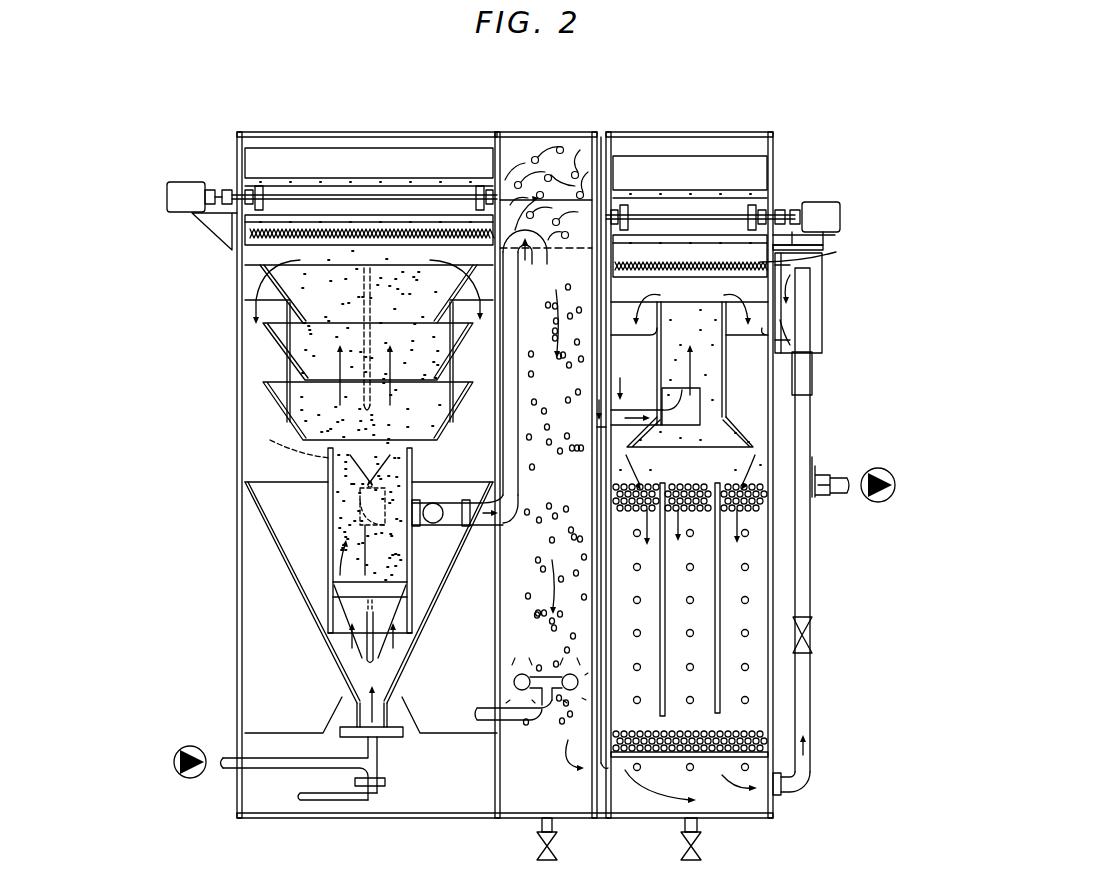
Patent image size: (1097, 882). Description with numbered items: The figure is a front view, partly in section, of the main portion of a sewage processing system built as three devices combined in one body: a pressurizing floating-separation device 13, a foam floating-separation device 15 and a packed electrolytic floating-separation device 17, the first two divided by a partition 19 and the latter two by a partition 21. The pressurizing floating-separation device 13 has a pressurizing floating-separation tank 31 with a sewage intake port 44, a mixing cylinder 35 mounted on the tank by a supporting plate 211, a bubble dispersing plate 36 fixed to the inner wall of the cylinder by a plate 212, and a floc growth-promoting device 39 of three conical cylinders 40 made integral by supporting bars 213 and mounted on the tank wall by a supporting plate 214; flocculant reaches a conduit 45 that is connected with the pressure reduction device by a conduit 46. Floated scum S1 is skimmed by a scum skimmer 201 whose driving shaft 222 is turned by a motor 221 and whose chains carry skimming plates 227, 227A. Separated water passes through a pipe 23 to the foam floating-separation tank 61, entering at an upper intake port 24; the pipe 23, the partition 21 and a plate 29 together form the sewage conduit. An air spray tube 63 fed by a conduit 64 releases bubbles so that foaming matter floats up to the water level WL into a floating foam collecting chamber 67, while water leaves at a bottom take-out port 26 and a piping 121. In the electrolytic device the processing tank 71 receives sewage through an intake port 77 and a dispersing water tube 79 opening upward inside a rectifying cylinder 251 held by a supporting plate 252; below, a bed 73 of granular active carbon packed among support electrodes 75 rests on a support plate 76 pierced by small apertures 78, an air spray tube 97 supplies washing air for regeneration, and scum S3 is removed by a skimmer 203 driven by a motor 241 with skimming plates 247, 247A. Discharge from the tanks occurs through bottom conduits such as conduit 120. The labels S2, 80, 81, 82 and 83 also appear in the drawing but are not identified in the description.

The pressurizing floating-separation device 13 is at (404, 140).
The foam floating-separation device 15 is at (587, 123).
The packed electrolytic floating-separation device 17 is at (706, 123).
The partition 19 is at (460, 340).
The partition 21 is at (606, 520).
The pipe 23 is at (503, 421).
The intake port 24 is at (541, 262).
The take-out port 26 is at (598, 762).
The plate 29 is at (591, 386).
The pressurizing floating-separation tank 31 is at (243, 343).
The mixing cylinder 35 is at (412, 530).
The bubble dispersing plate 36 is at (410, 587).
The floc growth-promoting device 39 is at (272, 398).
The conical cylinders 40 is at (293, 432).
The sewage intake port 44 is at (358, 712).
The conduit 45 is at (225, 769).
The conduit 46 is at (331, 801).
The foam floating-separation tank 61 is at (500, 578).
The air spray tube 63 is at (521, 672).
The conduit 64 is at (495, 710).
The floating foam collecting chamber 67 is at (505, 142).
The processing tank 71 is at (612, 382).
The bed of granular active carbon 73 is at (760, 556).
The support electrodes 75 is at (720, 690).
The support plate 76 is at (665, 752).
The sewage intake port 77 is at (611, 338).
The small apertures 78 is at (708, 756).
The dispersing water tube 79 is at (680, 425).
The outlet elbow 80 is at (790, 792).
The discharge pipe with valve 81 is at (812, 718).
The overflow box 82 is at (823, 283).
The outlet fitting with pump 83 is at (832, 496).
The air spray tube 97 is at (692, 772).
The discharge conduit 120 is at (683, 830).
The discharge conduit 121 is at (553, 830).
The scum skimmer 201 is at (256, 158).
The skimmer 203 is at (832, 175).
The supporting plate 211 is at (326, 625).
The plate 212 is at (405, 598).
The supporting bars 213 is at (290, 375).
The supporting plate 214 is at (248, 283).
The motor 221 is at (190, 182).
The driving shaft 222 is at (367, 194).
The skimming plate 227 is at (325, 150).
The skimming plate 227A is at (437, 226).
The motor 241 is at (826, 180).
The skimming plate 247 is at (751, 156).
The skimming plate 247A is at (648, 250).
The rectifying cylinder 251 is at (738, 440).
The supporting plate 252 is at (738, 330).
The scum S1 is at (262, 236).
The second stage S2 is at (570, 175).
The scum S3 is at (810, 253).
The water level WL is at (546, 241).